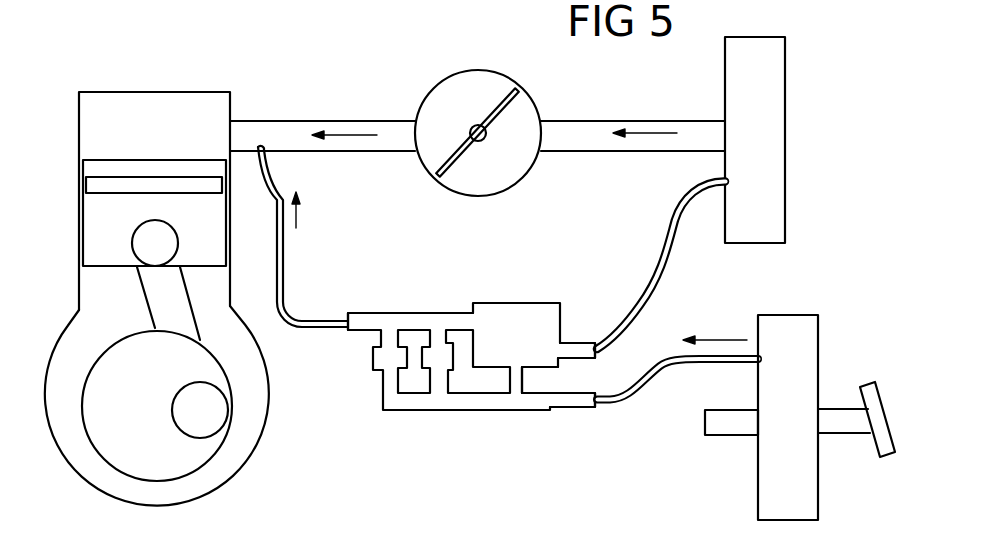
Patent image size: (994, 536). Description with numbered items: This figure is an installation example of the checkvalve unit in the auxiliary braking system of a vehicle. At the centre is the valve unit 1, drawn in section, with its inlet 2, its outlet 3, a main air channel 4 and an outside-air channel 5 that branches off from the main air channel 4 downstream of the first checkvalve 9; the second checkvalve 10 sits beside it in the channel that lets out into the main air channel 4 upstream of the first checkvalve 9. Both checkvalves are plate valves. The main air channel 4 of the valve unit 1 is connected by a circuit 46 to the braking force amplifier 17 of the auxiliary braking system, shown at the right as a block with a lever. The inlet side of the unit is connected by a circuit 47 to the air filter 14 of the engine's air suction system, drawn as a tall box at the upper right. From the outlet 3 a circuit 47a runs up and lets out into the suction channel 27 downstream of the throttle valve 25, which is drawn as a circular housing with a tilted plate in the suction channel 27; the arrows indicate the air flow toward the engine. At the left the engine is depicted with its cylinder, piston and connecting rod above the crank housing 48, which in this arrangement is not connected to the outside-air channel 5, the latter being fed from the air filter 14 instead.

The valve unit 1 is at (485, 382).
The inlet 2 is at (598, 410).
The outlet 3 is at (347, 313).
The main air channel 4 is at (547, 400).
The outside-air channel 5 is at (578, 350).
The first checkvalve 9 is at (388, 358).
The second checkvalve 10 is at (437, 357).
The air filter 14 is at (773, 148).
The braking force amplifier 17 is at (808, 348).
The throttle valve 25 is at (480, 95).
The suction channel 27 is at (277, 133).
The circuit 46 is at (653, 373).
The circuit 47 is at (667, 260).
The circuit 47a is at (320, 330).
The crank housing 48 is at (232, 450).